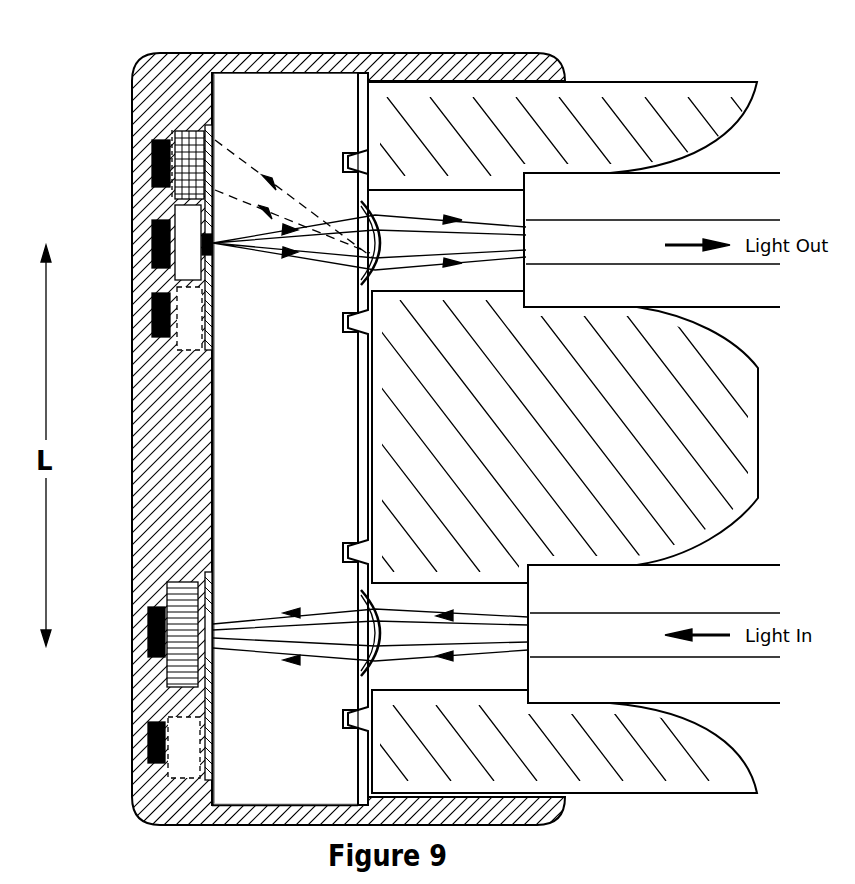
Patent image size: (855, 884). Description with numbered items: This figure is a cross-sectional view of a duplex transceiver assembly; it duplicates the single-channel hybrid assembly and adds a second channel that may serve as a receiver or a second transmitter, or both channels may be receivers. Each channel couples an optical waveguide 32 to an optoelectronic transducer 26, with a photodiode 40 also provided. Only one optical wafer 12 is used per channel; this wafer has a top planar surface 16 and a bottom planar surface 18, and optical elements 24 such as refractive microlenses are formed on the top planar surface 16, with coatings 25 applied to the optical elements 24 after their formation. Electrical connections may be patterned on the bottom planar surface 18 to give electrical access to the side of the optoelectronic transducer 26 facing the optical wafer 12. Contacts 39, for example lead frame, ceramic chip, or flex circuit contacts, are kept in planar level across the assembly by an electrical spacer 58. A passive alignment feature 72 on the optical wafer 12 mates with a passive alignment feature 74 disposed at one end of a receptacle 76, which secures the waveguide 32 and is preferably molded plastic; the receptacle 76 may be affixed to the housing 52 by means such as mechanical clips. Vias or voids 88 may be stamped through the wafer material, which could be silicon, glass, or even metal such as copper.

The optical wafer 12 is at (303, 87).
The top planar surface 16 is at (367, 807).
The bottom planar surface 18 is at (207, 72).
The optical element 24 is at (368, 206).
The coating 25 is at (362, 207).
The optoelectronic transducer 26 is at (187, 218).
The optical waveguide 32 is at (727, 173).
The contacts 39 is at (150, 152).
The photodiode 40 is at (177, 128).
The housing 52 is at (157, 812).
The electrical spacer 58 is at (183, 337).
The passive alignment feature 72 is at (343, 161).
The passive alignment feature 74 is at (368, 154).
The receptacle 76 is at (740, 423).
The vias or voids 88 is at (540, 97).